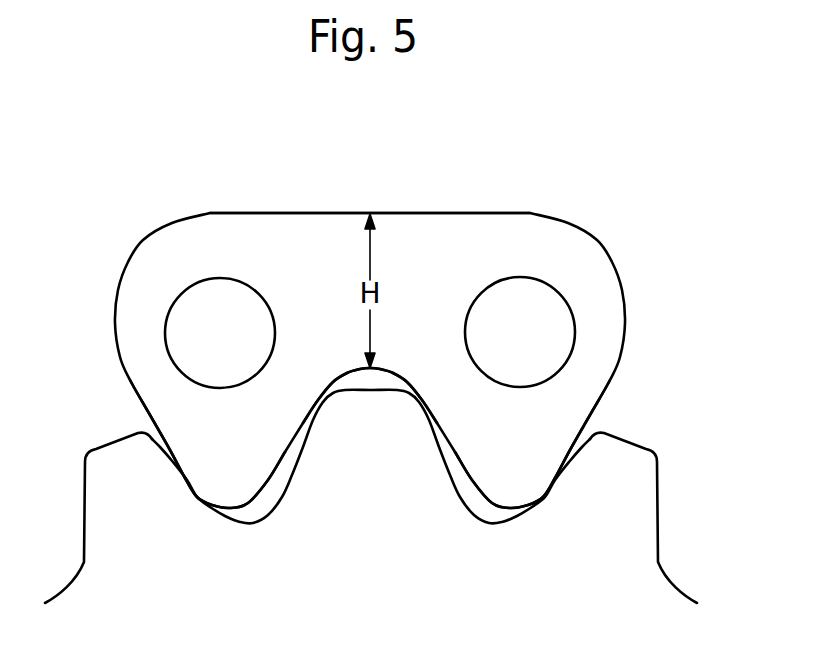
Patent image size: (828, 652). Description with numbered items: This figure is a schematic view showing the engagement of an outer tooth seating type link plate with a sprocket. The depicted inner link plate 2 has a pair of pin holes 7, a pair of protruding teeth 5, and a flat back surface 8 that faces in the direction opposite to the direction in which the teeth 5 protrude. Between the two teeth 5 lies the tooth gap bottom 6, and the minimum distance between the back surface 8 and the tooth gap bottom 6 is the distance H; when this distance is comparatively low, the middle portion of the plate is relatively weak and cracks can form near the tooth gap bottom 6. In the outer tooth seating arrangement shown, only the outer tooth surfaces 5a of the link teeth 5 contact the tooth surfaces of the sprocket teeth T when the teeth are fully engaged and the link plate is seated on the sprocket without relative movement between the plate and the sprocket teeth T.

The inner link plate 2 is at (480, 237).
The protruding teeth 5 is at (235, 480).
The outer tooth surfaces 5a is at (201, 486).
The tooth gap bottom 6 is at (372, 370).
The pin holes 7 is at (569, 311).
The flat back surface 8 is at (361, 213).
The sprocket teeth T is at (645, 492).